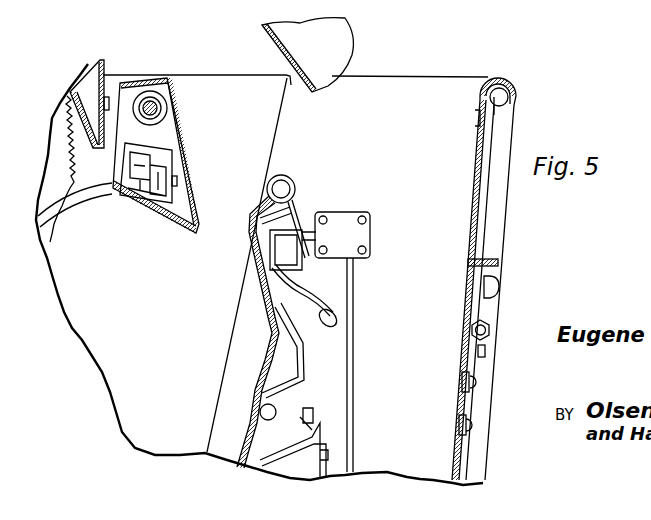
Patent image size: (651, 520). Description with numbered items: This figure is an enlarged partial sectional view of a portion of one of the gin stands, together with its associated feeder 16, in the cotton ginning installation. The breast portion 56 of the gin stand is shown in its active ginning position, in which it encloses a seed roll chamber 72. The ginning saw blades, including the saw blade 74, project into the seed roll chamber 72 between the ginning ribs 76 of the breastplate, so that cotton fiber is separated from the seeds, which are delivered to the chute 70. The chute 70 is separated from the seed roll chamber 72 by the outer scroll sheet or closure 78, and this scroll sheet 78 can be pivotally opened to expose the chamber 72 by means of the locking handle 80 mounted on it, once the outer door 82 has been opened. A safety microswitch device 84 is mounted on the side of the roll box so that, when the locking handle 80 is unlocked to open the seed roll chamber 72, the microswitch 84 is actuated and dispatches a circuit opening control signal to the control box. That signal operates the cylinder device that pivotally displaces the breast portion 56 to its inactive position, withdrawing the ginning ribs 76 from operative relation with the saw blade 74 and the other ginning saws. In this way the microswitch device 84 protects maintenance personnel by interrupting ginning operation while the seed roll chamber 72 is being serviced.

The feeder 16 is at (362, 41).
The breast portion 56 is at (484, 71).
The chute 70 is at (435, 335).
The seed roll chamber 72 is at (93, 320).
The saw blade 74 is at (53, 117).
The ginning ribs 76 is at (97, 197).
The outer scroll sheet 78 is at (258, 343).
The locking handle 80 is at (310, 297).
The outer door 82 is at (465, 397).
The safety microswitch device 84 is at (342, 222).